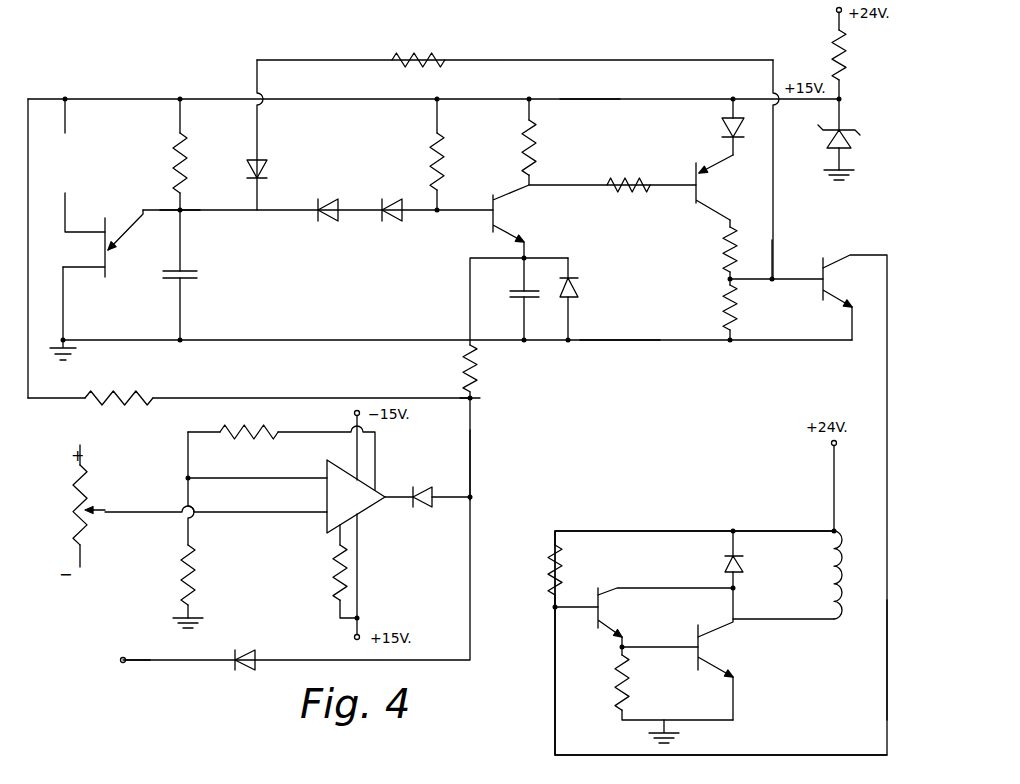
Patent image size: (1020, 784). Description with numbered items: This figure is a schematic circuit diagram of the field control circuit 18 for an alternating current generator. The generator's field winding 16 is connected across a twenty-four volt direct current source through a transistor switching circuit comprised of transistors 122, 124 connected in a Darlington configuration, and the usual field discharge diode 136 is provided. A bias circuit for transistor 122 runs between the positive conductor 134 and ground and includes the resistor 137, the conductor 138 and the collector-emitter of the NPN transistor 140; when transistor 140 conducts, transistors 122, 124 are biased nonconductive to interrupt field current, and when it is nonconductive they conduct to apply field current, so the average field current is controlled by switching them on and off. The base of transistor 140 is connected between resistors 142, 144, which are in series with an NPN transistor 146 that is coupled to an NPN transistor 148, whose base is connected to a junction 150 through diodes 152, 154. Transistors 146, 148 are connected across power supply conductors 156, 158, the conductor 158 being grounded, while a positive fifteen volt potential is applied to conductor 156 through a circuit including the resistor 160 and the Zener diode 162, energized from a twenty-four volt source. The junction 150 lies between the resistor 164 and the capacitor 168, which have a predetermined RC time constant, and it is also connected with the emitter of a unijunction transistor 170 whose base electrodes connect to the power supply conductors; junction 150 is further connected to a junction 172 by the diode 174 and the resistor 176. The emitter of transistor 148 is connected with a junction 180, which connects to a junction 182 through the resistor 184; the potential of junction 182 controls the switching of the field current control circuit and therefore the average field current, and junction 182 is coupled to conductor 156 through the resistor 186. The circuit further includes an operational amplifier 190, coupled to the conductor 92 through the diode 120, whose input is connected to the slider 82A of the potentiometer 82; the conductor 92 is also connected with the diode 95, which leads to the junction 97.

The field winding 16 is at (832, 574).
The field control circuit 18 is at (558, 492).
The potentiometer 82 is at (88, 472).
The slider 82A is at (124, 514).
The conductor 92 is at (471, 458).
The diode 95 is at (246, 650).
The junction 97 is at (121, 658).
The diode 120 is at (422, 508).
The transistor 122 is at (597, 626).
The transistor 124 is at (706, 656).
The positive conductor 134 is at (625, 530).
The field discharge diode 136 is at (723, 559).
The resistor 137 is at (552, 582).
The conductor 138 is at (886, 668).
The NPN transistor 140 is at (822, 262).
The resistor 142 is at (724, 248).
The resistor 144 is at (725, 312).
The NPN transistor 146 is at (698, 206).
The NPN transistor 148 is at (492, 196).
The junction 150 is at (184, 214).
The diode 152 is at (330, 225).
The diode 154 is at (395, 225).
The power supply conductor 156 is at (610, 101).
The power supply conductor 158 is at (620, 342).
The resistor 160 is at (834, 33).
The Zener diode 162 is at (850, 140).
The resistor 164 is at (186, 160).
The capacitor 168 is at (195, 280).
The unijunction transistor 170 is at (110, 218).
The junction 172 is at (772, 284).
The diode 174 is at (268, 165).
The resistor 176 is at (428, 55).
The junction 180 is at (527, 256).
The junction 182 is at (472, 400).
The resistor 184 is at (474, 375).
The resistor 186 is at (142, 396).
The operational amplifier 190 is at (326, 522).